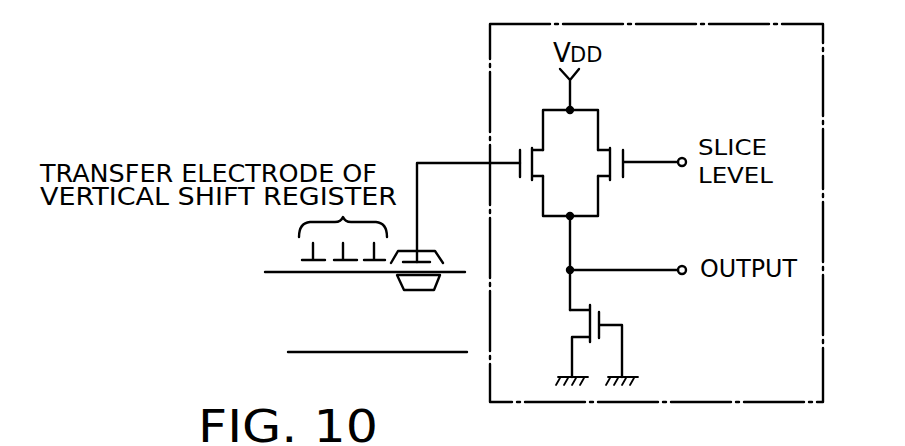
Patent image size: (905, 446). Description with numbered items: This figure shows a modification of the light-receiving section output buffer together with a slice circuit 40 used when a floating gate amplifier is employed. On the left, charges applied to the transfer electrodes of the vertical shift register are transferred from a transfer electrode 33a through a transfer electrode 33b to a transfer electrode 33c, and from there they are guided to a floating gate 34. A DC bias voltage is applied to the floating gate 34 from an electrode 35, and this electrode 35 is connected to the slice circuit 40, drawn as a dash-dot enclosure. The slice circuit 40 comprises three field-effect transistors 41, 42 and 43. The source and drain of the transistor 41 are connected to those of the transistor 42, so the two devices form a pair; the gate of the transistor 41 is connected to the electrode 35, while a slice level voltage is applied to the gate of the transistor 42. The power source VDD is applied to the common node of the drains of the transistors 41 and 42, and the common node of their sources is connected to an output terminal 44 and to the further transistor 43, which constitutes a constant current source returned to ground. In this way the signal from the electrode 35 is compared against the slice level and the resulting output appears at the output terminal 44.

The transfer electrode 33a is at (307, 262).
The transfer electrode 33b is at (340, 262).
The transfer electrode 33c is at (370, 262).
The floating gate 34 is at (425, 292).
The electrode 35 is at (436, 251).
The slice circuit 40 is at (489, 52).
The field-effect transistor 41 is at (520, 148).
The field-effect transistor 42 is at (623, 148).
The field-effect transistor 43 is at (598, 300).
The output terminal 44 is at (683, 266).